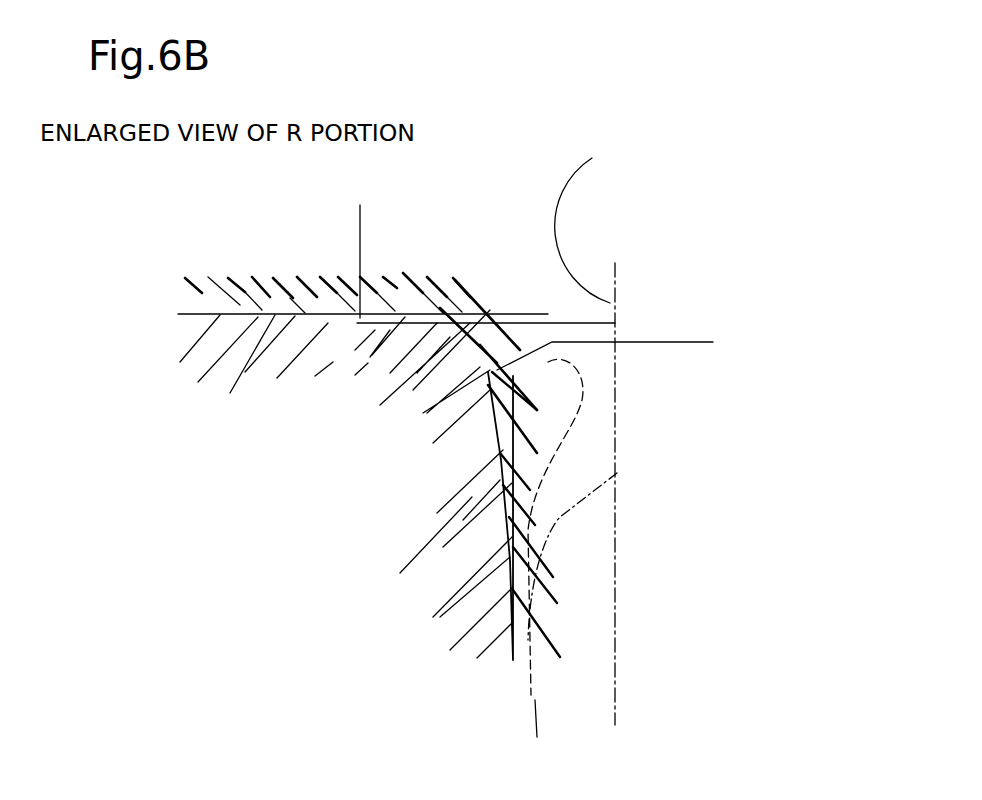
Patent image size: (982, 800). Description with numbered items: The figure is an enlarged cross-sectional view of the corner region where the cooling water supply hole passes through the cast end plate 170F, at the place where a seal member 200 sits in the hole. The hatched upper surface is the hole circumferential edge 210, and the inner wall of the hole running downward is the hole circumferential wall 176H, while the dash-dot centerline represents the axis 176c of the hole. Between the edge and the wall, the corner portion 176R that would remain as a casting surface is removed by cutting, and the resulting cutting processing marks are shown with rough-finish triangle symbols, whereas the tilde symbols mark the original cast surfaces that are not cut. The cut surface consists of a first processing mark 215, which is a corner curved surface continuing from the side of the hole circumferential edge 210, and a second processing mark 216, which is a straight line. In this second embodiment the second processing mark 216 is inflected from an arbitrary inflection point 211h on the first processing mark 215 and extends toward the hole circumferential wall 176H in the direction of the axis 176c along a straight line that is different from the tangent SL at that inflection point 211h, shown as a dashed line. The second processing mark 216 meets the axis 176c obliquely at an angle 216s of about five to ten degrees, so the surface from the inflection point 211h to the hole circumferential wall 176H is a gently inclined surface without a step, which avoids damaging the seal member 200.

The hole circumferential edge 210 is at (259, 312).
The first processing mark 215 is at (361, 245).
The seal member 200 is at (479, 470).
The end plate 170F is at (343, 351).
The axis 176c is at (606, 218).
The hole circumferential wall 176H is at (548, 640).
The corner portion 176R is at (515, 518).
The inflection point 211h is at (490, 385).
The second processing mark 216 is at (513, 443).
The angle 216s is at (538, 718).
The tangent SL is at (617, 473).